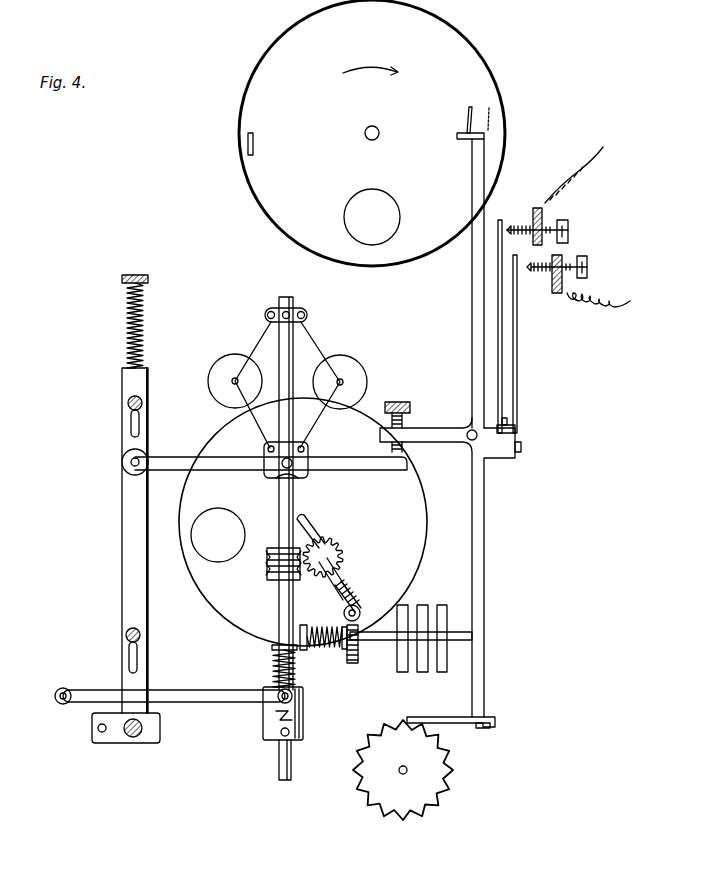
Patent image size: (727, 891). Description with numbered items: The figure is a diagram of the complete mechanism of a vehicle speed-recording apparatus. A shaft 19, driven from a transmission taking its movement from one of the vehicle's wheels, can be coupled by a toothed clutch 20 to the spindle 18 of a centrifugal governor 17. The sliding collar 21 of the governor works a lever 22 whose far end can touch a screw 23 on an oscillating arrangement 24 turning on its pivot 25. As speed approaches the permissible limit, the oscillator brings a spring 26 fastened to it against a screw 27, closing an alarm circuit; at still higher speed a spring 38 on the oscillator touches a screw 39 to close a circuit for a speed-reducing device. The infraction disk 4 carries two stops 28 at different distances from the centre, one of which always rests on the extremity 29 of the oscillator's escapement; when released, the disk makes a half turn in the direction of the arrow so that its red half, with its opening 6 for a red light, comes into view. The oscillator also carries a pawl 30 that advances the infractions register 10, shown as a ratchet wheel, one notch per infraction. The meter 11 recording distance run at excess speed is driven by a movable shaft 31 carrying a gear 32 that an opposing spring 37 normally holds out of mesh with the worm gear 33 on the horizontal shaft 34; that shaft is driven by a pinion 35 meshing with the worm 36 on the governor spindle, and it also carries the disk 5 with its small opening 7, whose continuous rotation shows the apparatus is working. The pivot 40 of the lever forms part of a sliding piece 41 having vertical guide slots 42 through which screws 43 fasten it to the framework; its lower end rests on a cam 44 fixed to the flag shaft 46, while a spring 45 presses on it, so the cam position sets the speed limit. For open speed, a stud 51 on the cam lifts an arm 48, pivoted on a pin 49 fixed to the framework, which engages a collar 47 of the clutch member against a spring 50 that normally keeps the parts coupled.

The infraction disk 4 is at (249, 84).
The disk 5 is at (182, 497).
The opening 6 is at (372, 217).
The opening 7 is at (191, 545).
The infractions register 10 is at (442, 786).
The meter 11 is at (422, 673).
The centrifugal governor 17 is at (358, 370).
The spindle 18 is at (279, 605).
The shaft 19 is at (279, 765).
The toothed clutch 20 is at (303, 722).
The sliding collar 21 is at (309, 451).
The lever 22 is at (412, 473).
The screw 23 is at (405, 401).
The oscillating arrangement 24 is at (484, 565).
The pivot 25 is at (478, 440).
The spring 26 is at (500, 221).
The screw 27 is at (568, 228).
The stops 28 is at (248, 146).
The extremity of the escapement 29 is at (458, 140).
The pawl 30 is at (452, 725).
The shaft 31 is at (475, 636).
The gear 32 is at (352, 664).
The worm gear 33 is at (359, 603).
The horizontal shaft 34 is at (350, 585).
The pinion 35 is at (343, 548).
The worm 36 is at (270, 573).
The opposing spring 37 is at (325, 650).
The spring 38 is at (517, 380).
The screw 39 is at (590, 267).
The pivot 40 is at (122, 468).
The sliding piece 41 is at (122, 509).
The vertical guide slots 42 is at (131, 424).
The screws 43 is at (128, 403).
The cam 44 is at (160, 728).
The spring 45 is at (127, 330).
The shaft of the flag 46 is at (131, 738).
The collar 47 is at (274, 713).
The arm 48 is at (194, 690).
The pin 49 is at (55, 697).
The spring 50 is at (273, 656).
The stud 51 is at (97, 730).